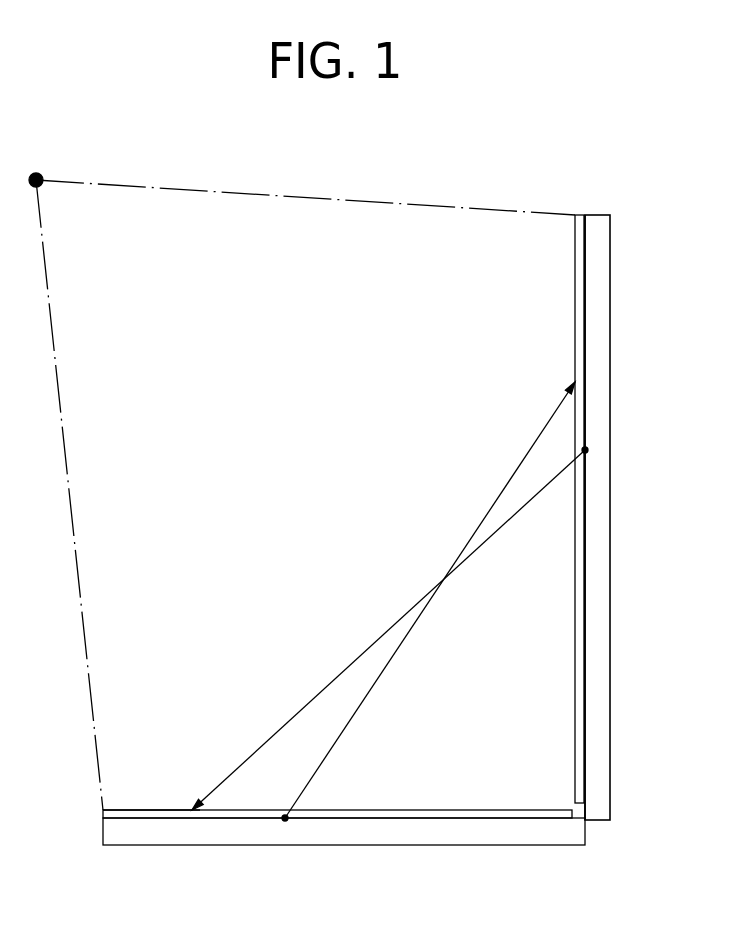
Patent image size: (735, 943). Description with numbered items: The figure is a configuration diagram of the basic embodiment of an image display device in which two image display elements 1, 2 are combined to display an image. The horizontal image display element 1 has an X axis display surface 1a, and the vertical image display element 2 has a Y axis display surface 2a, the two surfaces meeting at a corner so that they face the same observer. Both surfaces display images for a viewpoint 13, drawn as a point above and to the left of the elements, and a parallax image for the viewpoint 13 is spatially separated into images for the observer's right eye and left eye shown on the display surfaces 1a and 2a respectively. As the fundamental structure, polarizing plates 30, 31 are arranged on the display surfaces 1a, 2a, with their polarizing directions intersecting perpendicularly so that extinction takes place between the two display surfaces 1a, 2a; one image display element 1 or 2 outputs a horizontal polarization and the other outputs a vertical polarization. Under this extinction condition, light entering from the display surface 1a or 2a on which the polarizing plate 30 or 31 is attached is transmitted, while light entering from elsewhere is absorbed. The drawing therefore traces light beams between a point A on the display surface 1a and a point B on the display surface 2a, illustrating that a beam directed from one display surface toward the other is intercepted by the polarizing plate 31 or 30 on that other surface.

The image display element 1 is at (340, 847).
The display surface 1a is at (398, 818).
The image display element 2 is at (598, 492).
The display surface 2a is at (583, 632).
The viewpoint 13 is at (40, 172).
The polarizing plate 30 is at (132, 810).
The polarizing plate 31 is at (575, 282).
The point A on bottom panel A is at (285, 817).
The point B on side panel B is at (585, 450).